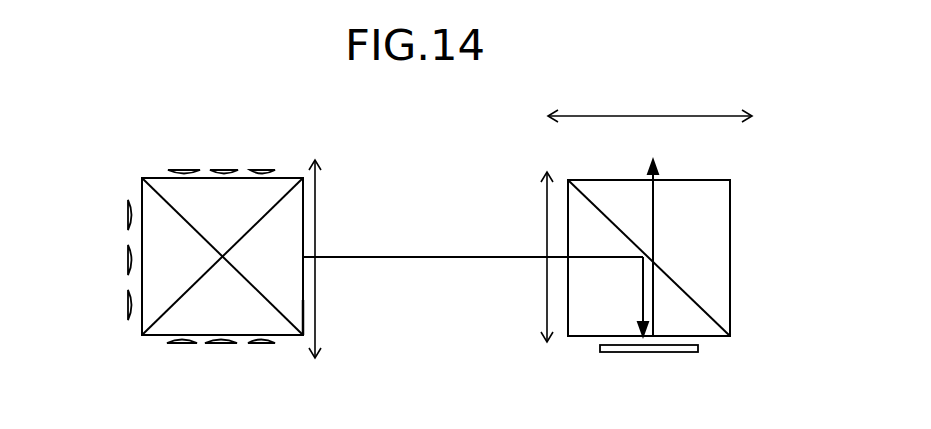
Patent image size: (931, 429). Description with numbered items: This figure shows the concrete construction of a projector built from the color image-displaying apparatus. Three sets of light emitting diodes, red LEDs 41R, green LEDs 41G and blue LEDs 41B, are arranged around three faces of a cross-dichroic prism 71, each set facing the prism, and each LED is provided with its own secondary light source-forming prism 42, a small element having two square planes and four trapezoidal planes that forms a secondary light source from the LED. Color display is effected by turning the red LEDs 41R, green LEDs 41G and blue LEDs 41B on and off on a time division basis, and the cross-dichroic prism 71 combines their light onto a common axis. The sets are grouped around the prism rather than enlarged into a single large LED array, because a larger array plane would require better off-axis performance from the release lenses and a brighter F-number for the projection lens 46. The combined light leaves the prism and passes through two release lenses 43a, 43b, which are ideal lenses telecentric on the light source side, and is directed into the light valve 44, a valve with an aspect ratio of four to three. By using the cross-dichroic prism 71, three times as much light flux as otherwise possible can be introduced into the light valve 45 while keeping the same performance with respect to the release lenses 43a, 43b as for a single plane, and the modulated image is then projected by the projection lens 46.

The red LED 41R is at (265, 153).
The green LED 41G is at (110, 300).
The blue LED 41B is at (262, 358).
The secondary light source-forming prism 42 is at (128, 208).
The release lens 43a is at (318, 206).
The release lens 43b is at (543, 212).
The light valve 44 is at (732, 250).
The light valve 45 is at (638, 353).
The projection lens 46 is at (635, 110).
The cross-dichroic prism 71 is at (305, 310).